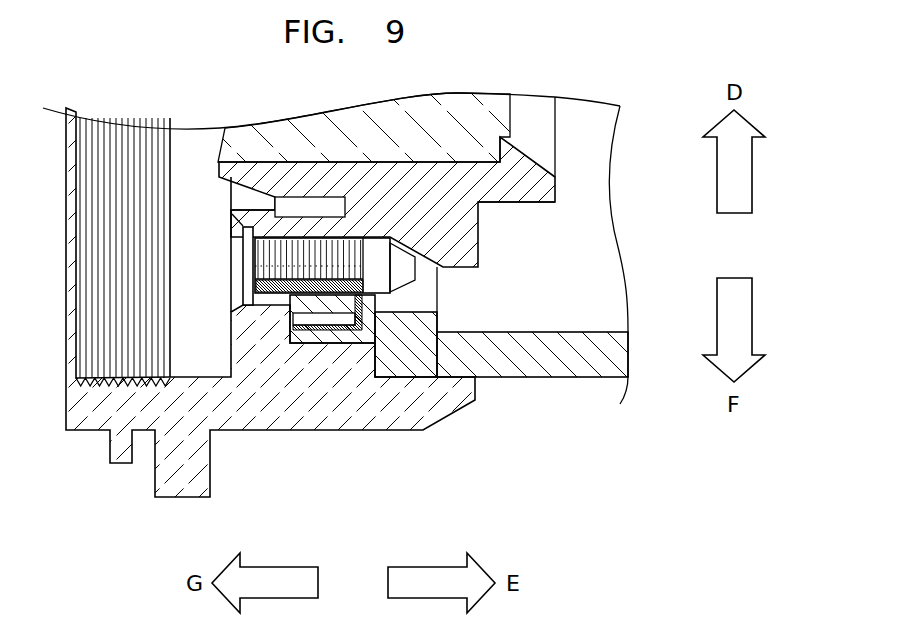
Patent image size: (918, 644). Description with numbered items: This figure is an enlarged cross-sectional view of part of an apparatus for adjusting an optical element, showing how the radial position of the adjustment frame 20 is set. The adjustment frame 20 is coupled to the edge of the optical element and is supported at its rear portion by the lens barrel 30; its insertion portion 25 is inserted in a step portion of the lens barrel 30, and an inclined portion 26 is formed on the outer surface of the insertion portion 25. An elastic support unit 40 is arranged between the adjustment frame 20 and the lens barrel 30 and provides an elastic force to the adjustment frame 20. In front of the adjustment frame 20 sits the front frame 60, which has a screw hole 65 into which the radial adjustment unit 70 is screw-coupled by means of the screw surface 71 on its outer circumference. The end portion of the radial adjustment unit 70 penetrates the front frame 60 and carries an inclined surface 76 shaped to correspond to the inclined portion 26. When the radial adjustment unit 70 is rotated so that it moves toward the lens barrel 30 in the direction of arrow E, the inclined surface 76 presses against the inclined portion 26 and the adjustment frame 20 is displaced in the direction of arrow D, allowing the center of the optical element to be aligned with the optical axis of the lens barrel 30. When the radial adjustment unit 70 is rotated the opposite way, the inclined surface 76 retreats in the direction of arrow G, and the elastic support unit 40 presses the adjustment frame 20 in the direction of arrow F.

The adjustment frame 20 is at (562, 184).
The insertion portion 25 is at (522, 203).
The inclined portion 26 is at (420, 287).
The lens barrel 30 is at (507, 380).
The elastic support unit 40 is at (308, 268).
The front frame 60 is at (152, 472).
The screw hole 65 is at (286, 285).
The radial adjustment unit 70 is at (335, 304).
The screw surface 71 is at (273, 290).
The inclined surface 76 is at (388, 287).